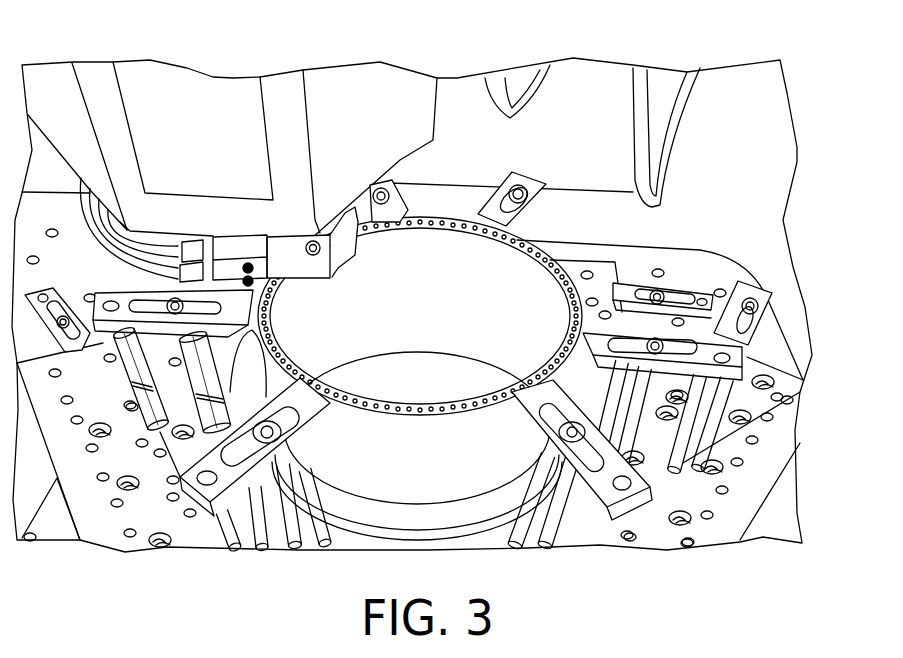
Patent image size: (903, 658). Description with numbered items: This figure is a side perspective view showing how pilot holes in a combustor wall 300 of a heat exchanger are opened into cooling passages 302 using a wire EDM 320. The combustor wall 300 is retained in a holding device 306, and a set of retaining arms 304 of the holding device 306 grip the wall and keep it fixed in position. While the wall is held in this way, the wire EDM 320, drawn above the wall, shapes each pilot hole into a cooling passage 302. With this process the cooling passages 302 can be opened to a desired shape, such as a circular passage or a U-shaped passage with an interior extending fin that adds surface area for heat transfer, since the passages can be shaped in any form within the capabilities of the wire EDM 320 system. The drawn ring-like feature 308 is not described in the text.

The combustor wall 300 is at (422, 483).
The cooling passages 302 is at (352, 440).
The retaining arms 304 is at (785, 420).
The holding device 306 is at (790, 438).
The central opening 308 is at (445, 250).
The wire EDM 320 is at (385, 103).